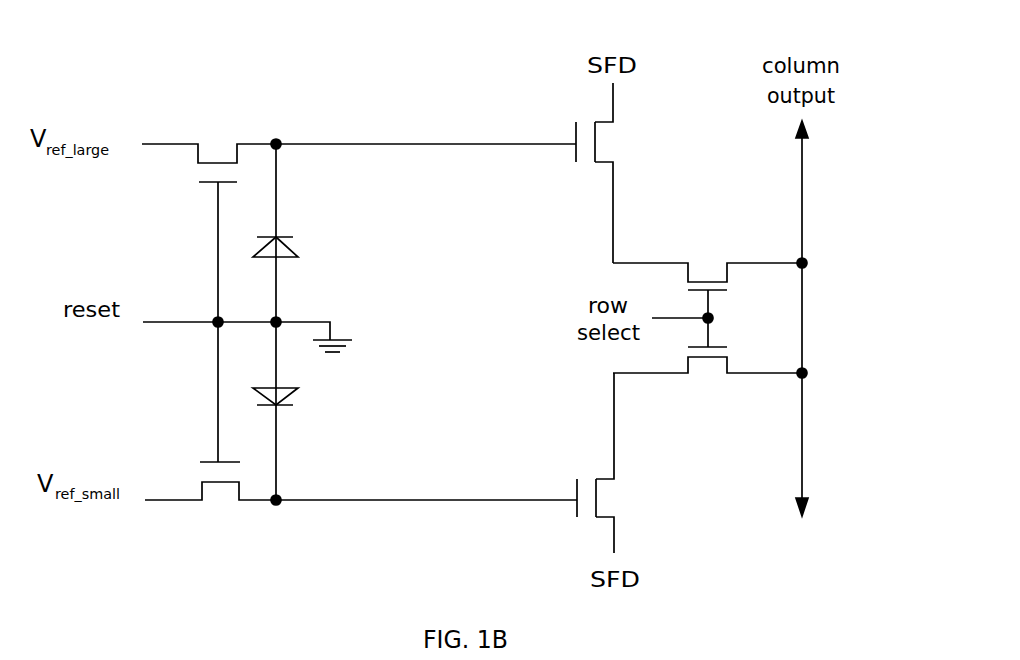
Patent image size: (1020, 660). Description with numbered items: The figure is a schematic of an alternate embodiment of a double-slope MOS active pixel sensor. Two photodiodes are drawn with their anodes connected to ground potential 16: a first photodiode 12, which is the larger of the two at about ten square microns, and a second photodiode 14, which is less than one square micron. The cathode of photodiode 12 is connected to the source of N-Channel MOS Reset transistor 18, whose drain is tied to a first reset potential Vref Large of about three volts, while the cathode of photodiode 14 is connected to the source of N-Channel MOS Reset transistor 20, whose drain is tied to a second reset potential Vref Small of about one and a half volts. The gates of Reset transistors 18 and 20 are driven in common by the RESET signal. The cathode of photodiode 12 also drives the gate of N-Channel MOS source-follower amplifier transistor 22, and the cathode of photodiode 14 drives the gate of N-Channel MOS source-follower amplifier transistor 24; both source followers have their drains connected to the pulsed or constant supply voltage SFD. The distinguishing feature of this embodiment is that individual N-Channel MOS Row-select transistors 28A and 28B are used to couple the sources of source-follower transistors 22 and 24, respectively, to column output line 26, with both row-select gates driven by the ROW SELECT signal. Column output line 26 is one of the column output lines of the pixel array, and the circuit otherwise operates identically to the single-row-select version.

The first photodiode 12 is at (292, 232).
The second photodiode 14 is at (308, 388).
The ground potential 16 is at (313, 318).
The N-Channel MOS Reset transistor 18 is at (218, 156).
The N-Channel MOS Reset transistor 20 is at (220, 490).
The N-Channel MOS source-follower amplifier transistor 22 is at (597, 139).
The N-Channel MOS source-follower amplifier transistor 24 is at (605, 492).
The column output line 26 is at (805, 308).
The N-Channel MOS Row-select transistor 28A is at (710, 260).
The N-Channel MOS Row-select transistor 28B is at (707, 378).